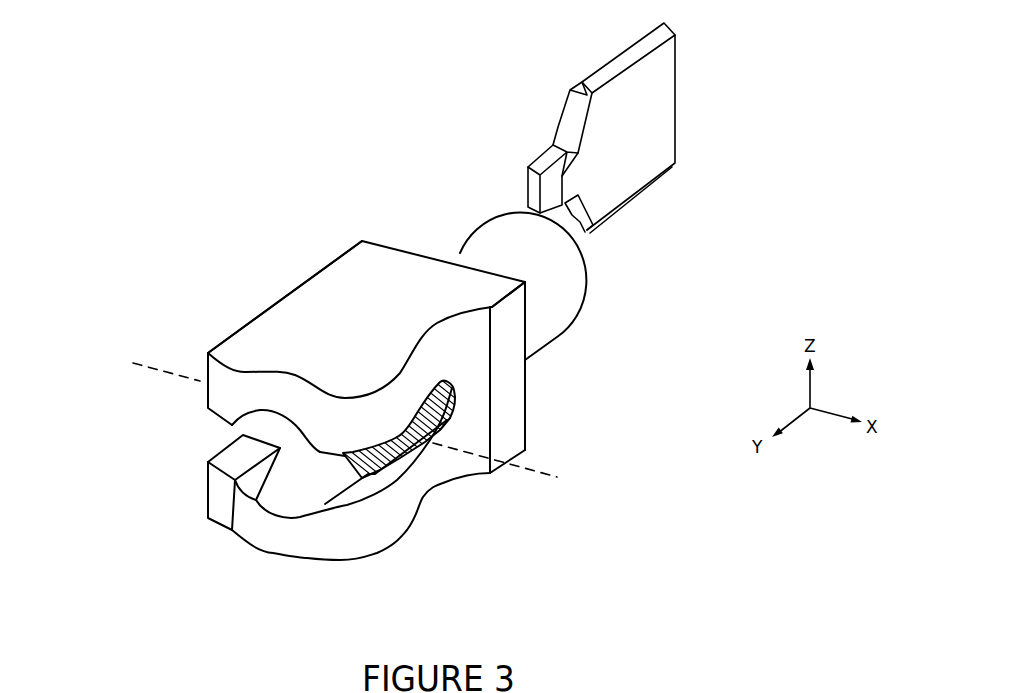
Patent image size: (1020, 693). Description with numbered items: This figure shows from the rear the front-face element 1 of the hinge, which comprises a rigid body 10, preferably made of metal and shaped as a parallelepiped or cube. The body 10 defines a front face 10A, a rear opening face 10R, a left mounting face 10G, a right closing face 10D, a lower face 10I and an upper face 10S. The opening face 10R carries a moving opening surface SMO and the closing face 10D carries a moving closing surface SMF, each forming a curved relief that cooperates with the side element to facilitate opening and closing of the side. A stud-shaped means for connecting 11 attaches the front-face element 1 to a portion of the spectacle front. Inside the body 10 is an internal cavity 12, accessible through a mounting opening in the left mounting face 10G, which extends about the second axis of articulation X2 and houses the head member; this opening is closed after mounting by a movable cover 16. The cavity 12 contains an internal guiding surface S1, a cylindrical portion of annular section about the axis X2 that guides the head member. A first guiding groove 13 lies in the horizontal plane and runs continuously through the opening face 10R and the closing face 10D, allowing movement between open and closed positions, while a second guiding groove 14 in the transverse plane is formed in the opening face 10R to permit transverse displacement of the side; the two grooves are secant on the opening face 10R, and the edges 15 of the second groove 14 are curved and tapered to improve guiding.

The front-face element 1 is at (146, 250).
The rigid body 10 is at (367, 212).
The upper face 10S is at (351, 314).
The left mounting face 10G is at (284, 279).
The right closing face 10D is at (488, 384).
The front face 10A is at (534, 308).
The moving closing surface SMF is at (470, 347).
The moving opening surface SMO is at (222, 388).
The edges of the second guiding groove 15 is at (278, 383).
The internal guiding surface S1 is at (336, 458).
The first guiding groove 13 is at (424, 466).
The internal cavity 12 is at (340, 466).
The second guiding groove 14 is at (279, 503).
The rear opening face 10R is at (284, 538).
The lower face 10I is at (418, 535).
The second axis of articulation X2 is at (361, 427).
The means for connecting 11 is at (575, 263).
The movable cover 16 is at (642, 105).